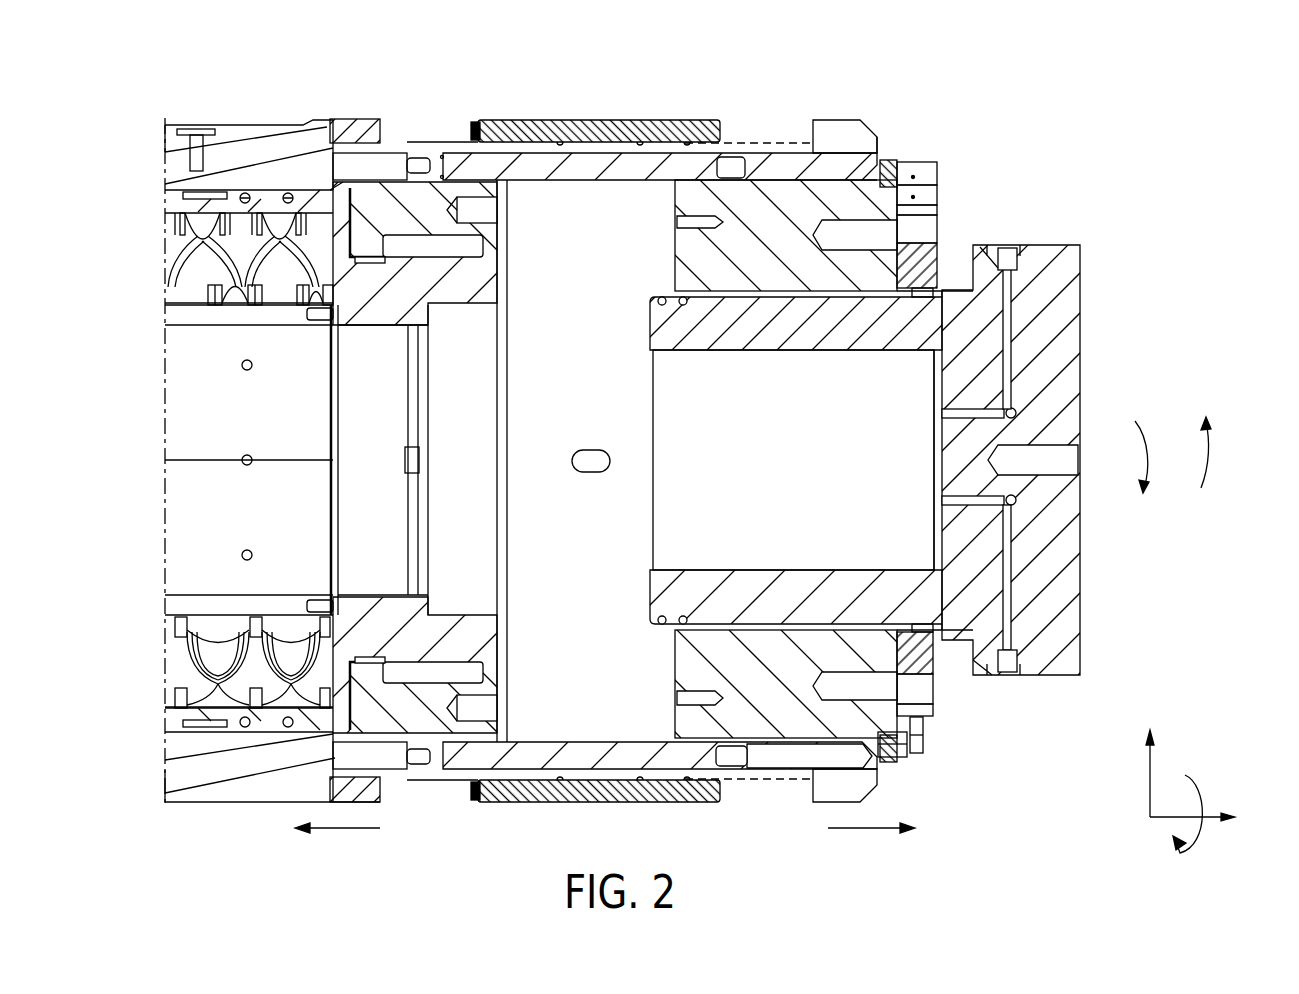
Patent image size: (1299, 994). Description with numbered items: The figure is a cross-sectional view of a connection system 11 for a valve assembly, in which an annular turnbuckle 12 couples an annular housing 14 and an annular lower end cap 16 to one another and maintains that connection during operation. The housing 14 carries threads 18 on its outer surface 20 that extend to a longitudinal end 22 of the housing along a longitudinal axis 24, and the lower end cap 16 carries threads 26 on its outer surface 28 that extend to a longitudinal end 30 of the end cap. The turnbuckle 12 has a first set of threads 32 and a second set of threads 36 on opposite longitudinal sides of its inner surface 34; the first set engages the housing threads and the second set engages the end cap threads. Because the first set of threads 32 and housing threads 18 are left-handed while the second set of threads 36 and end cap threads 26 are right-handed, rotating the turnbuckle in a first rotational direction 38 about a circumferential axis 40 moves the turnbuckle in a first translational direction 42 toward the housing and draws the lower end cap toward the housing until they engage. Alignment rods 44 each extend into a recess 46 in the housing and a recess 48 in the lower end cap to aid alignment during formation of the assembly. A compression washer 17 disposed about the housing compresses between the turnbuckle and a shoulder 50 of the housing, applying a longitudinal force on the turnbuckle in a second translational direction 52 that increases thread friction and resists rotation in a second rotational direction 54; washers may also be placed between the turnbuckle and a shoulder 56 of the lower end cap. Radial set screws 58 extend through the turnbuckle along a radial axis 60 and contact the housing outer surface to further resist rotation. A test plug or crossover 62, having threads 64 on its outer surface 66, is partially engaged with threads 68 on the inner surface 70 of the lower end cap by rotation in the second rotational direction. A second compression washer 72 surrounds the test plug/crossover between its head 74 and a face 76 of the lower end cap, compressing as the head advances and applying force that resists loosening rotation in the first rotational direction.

The connection system 11 is at (997, 103).
The turnbuckle 12 is at (612, 120).
The housing 14 is at (252, 128).
The lower end cap 16 is at (850, 197).
The compression washer 17 is at (348, 119).
The threads 18 is at (427, 130).
The outer surface 20 is at (420, 95).
The longitudinal end 22 is at (528, 120).
The longitudinal axis 24 is at (1165, 817).
The threads 26 is at (736, 152).
The outer surface 28 is at (789, 90).
The longitudinal end 30 is at (680, 120).
The first set of threads 32 is at (575, 120).
The inner surface 34 is at (565, 202).
The second set of threads 36 is at (656, 120).
The first rotational direction 38 is at (1148, 460).
The circumferential axis 40 is at (1202, 792).
The first translational direction 42 is at (342, 830).
The alignment rods 44 is at (595, 172).
The recess 46 is at (388, 145).
The recess 48 is at (870, 128).
The shoulder 50 is at (315, 124).
The second translational direction 52 is at (866, 830).
The second rotational direction 54 is at (1211, 453).
The shoulder 56 is at (830, 120).
The radial set screws 58 is at (475, 120).
The radial axis 60 is at (1150, 778).
The test plug or crossover 62 is at (1060, 280).
The threads 64 is at (872, 298).
The outer surface 66 is at (810, 266).
The threads 68 is at (900, 240).
The inner surface 70 is at (815, 310).
The second compression washer 72 is at (918, 660).
The head 74 is at (978, 655).
The face 76 is at (912, 268).